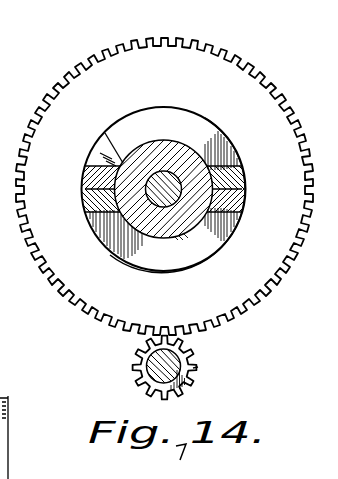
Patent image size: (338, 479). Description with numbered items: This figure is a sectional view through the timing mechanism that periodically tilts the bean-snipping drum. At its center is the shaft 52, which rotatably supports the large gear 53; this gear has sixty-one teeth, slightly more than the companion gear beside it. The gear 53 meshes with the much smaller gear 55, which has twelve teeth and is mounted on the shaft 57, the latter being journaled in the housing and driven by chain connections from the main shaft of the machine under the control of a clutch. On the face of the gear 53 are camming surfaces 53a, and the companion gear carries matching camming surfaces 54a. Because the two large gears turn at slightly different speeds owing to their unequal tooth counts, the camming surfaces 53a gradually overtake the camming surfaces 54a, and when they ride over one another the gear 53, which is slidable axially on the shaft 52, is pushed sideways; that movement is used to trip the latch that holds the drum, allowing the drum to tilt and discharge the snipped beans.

The shaft 52 is at (176, 212).
The gear 53 is at (164, 177).
The camming surfaces 53a is at (250, 213).
The camming surfaces 54a is at (250, 182).
The gear 55 is at (134, 375).
The shaft 57 is at (184, 386).